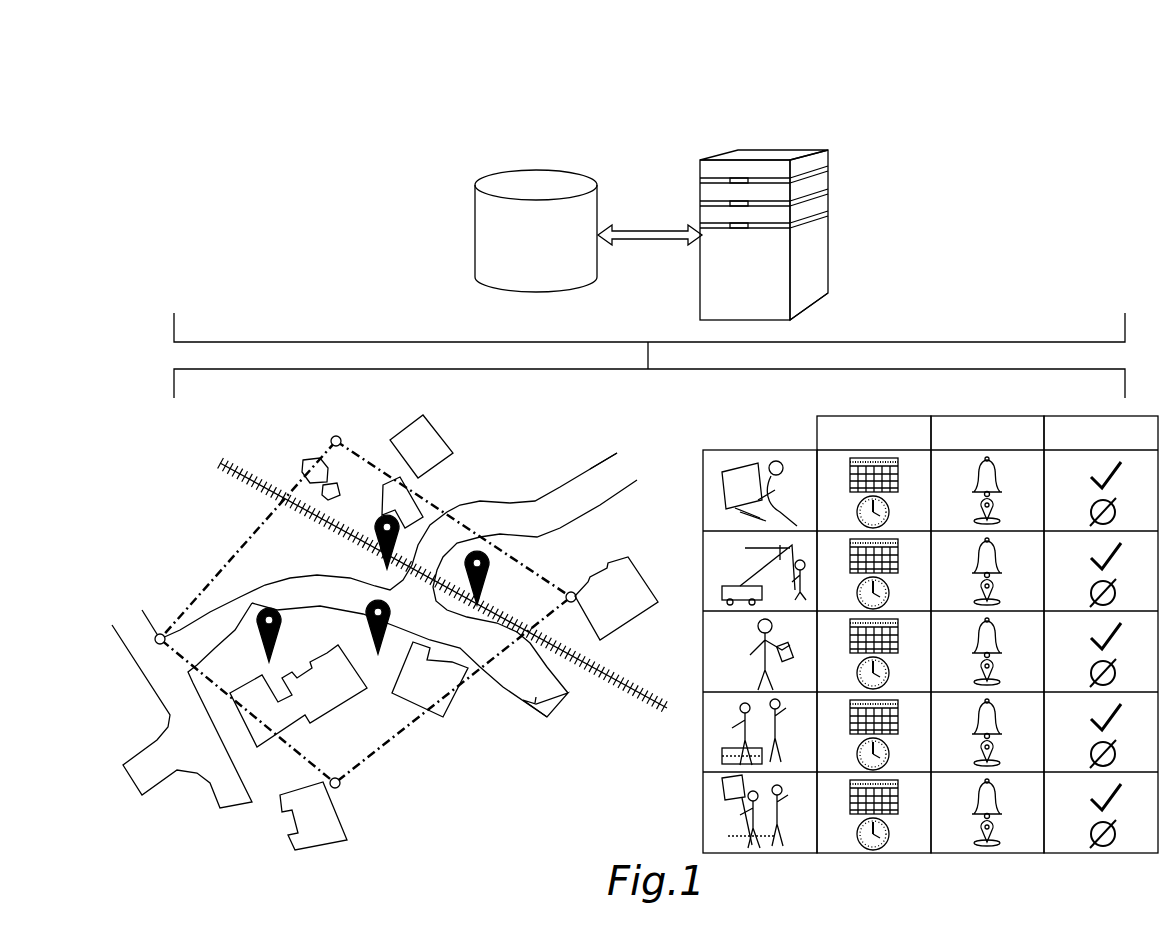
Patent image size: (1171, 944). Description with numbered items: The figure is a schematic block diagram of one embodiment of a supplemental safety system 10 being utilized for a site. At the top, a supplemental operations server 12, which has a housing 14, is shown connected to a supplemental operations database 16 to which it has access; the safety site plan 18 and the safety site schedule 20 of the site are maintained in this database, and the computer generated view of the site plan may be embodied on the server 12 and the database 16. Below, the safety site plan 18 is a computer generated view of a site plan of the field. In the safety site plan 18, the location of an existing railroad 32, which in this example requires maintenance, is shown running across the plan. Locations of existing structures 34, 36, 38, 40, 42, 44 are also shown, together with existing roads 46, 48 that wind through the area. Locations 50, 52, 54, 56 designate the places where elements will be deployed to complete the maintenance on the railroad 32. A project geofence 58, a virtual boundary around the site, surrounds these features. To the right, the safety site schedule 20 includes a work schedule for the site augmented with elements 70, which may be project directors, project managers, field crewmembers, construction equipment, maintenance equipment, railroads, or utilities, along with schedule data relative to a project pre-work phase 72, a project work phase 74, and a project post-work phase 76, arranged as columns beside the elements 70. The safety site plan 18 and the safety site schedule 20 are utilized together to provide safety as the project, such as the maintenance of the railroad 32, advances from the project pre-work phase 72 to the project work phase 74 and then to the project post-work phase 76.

The supplemental safety system 10 is at (467, 176).
The supplemental operations server 12 is at (830, 178).
The housing 14 is at (810, 306).
The supplemental operations database 16 is at (476, 242).
The safety site plan 18 is at (503, 460).
The safety site schedule 20 is at (752, 442).
The railroad 32 is at (247, 472).
The existing structure 34 is at (435, 438).
The existing structure 36 is at (413, 492).
The existing structure 38 is at (638, 578).
The existing structure 40 is at (452, 700).
The existing structure 42 is at (327, 697).
The existing structure 44 is at (333, 822).
The existing road 46 is at (603, 467).
The existing road 48 is at (535, 700).
The location 50 is at (378, 512).
The location 52 is at (508, 556).
The location 54 is at (388, 627).
The location 56 is at (257, 610).
The project geofence 58 is at (210, 582).
The elements 70 is at (703, 470).
The project pre-work phase 72 is at (870, 422).
The project work phase 74 is at (987, 422).
The project post-work phase 76 is at (1103, 422).